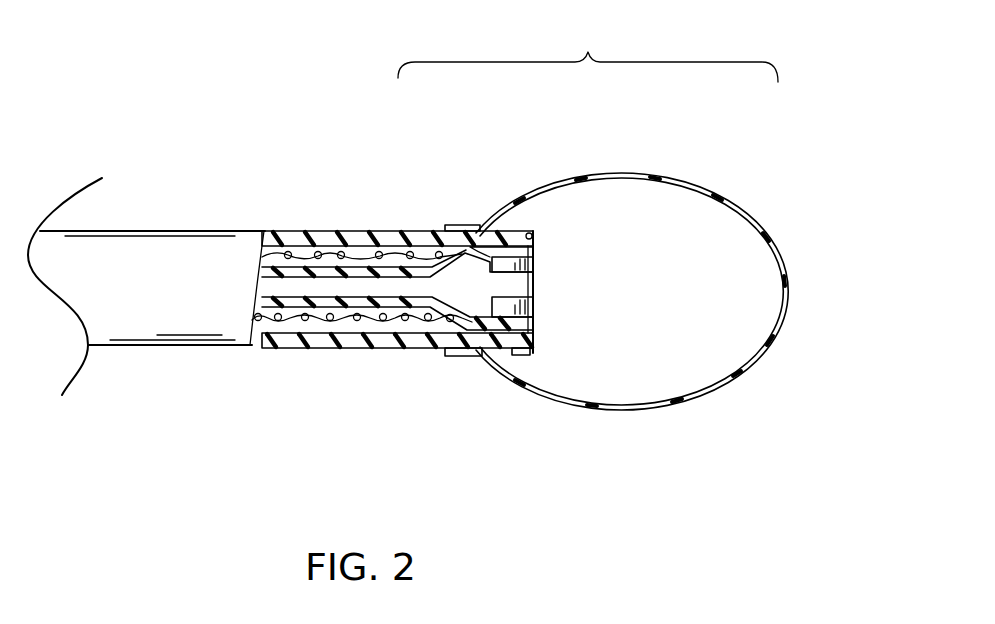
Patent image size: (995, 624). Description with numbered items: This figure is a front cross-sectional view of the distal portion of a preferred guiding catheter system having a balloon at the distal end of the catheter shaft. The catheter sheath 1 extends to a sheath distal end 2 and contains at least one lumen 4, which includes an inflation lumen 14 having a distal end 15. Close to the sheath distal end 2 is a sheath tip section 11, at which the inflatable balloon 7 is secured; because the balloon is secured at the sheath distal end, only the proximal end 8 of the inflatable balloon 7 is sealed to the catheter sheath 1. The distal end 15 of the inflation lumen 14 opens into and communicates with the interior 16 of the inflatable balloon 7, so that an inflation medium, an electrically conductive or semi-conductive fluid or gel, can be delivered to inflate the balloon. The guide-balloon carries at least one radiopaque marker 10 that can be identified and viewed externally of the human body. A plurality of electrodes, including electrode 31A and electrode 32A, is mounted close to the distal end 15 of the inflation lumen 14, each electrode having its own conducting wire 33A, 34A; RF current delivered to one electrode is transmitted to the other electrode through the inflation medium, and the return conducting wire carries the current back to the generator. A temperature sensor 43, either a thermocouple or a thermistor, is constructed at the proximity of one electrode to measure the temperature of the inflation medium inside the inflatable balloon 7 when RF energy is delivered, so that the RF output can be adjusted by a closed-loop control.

The catheter sheath 1 is at (248, 231).
The sheath distal end 2 is at (538, 343).
The lumen 4 is at (378, 313).
The inflatable balloon 7 is at (692, 181).
The proximal end of inflatable balloon 8 is at (468, 226).
The radiopaque marker 10 is at (522, 358).
The sheath tip section 11 is at (588, 48).
The inflation lumen 14 is at (350, 283).
The distal end of inflation lumen 15 is at (538, 284).
The interior of inflatable balloon 16 is at (736, 240).
The electrode 31A is at (538, 252).
The electrode 32A is at (498, 310).
The conducting wire 33A is at (320, 248).
The conducting wire 34A is at (308, 320).
The temperature sensor 43 is at (538, 234).